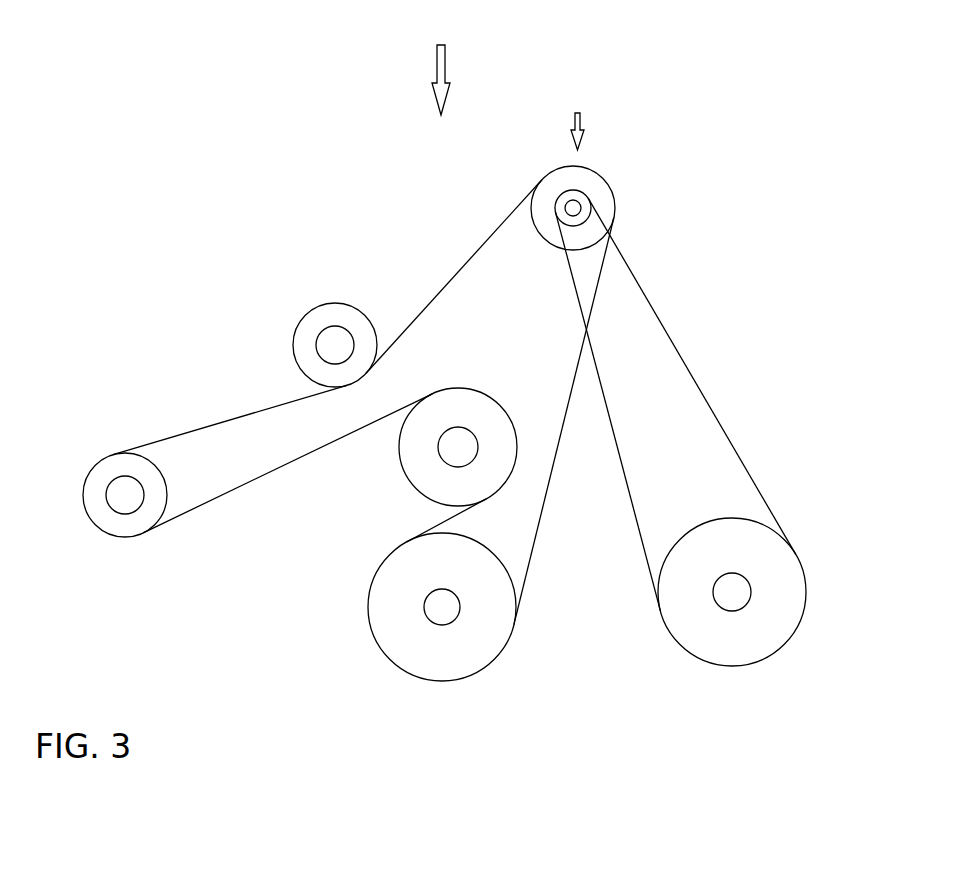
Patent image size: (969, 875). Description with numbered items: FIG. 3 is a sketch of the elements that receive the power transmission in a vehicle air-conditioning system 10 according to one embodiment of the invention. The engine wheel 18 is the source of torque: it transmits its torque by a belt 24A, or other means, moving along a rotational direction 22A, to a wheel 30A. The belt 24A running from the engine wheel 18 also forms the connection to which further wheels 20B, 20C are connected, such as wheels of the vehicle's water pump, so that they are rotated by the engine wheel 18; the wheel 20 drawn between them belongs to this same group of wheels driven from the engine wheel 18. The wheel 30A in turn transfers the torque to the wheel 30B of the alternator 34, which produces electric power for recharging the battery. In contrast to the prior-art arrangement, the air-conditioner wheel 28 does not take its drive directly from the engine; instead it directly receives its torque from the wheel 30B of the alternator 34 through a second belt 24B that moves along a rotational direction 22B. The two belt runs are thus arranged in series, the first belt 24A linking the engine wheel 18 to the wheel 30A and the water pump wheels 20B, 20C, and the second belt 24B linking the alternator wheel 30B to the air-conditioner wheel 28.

The vehicle air-conditioning system 10 is at (440, 64).
The engine wheel 18 is at (390, 635).
The pulley 20 is at (412, 466).
The wheel 20B is at (323, 318).
The wheel 20C is at (102, 513).
The rotational direction 22A is at (563, 421).
The rotational direction 22B is at (688, 405).
The belt 24A is at (545, 508).
The belt 24B is at (745, 474).
The air-conditioner wheel 28 is at (783, 592).
The wheel 30A is at (572, 172).
The wheel of alternator 30B is at (584, 198).
The alternator 34 is at (576, 118).